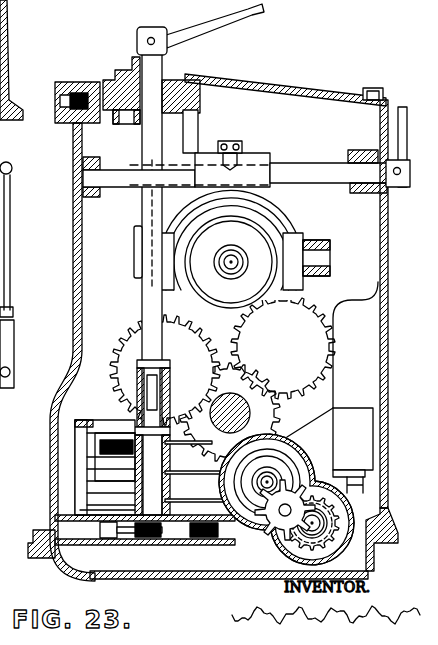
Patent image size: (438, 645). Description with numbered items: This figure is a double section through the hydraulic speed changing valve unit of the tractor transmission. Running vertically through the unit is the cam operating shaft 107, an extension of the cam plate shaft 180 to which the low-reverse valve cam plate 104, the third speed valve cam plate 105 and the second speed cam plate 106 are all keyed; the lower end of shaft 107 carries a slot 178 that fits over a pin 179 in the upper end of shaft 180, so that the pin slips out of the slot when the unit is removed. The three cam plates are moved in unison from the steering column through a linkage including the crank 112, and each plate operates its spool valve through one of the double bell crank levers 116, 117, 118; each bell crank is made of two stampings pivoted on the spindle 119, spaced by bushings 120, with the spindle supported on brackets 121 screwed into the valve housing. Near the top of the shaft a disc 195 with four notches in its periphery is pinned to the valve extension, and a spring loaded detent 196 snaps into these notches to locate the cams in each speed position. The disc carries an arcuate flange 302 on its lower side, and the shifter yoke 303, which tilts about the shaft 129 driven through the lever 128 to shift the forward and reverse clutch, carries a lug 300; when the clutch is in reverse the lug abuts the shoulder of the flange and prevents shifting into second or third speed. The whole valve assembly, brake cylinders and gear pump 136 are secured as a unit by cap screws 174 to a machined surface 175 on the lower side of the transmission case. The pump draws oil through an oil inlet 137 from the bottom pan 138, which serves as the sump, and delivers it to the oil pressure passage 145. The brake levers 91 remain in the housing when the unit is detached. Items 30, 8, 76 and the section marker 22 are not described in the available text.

The brake lever 91 is at (9, 44).
The frame member 30 is at (107, 3).
The lever 8 is at (152, 28).
The crank 112 is at (264, 9).
The spring loaded detent 196 is at (105, 80).
The disc 195 is at (119, 72).
The section line 22 is at (43, 122).
The arcuate flange 302 is at (138, 125).
The lug 300 is at (171, 134).
The lever 128 is at (404, 107).
The shaft 129 is at (330, 165).
The shifter yoke 303 is at (307, 207).
The rod 76 is at (9, 273).
The cam operating shaft 107 is at (142, 304).
The slot 178 is at (162, 360).
The pin 179 is at (170, 369).
The bracket 121 is at (108, 432).
The double bell crank lever 116 is at (75, 428).
The spindle 119 is at (86, 462).
The double bell crank lever 117 is at (62, 493).
The bushing 120 is at (60, 514).
The double bell crank lever 118 is at (104, 502).
The low-reverse valve cam plate 104 is at (216, 418).
The third speed valve cam plate 105 is at (204, 470).
The second speed cam plate 106 is at (208, 498).
The machined surface 175 is at (337, 406).
The cap screw 174 is at (362, 491).
The cam plate shaft 180 is at (172, 538).
The oil pressure passage 145 is at (262, 540).
The gear pump 136 is at (290, 566).
The oil inlet 137 is at (366, 561).
The bottom pan 138 is at (180, 580).